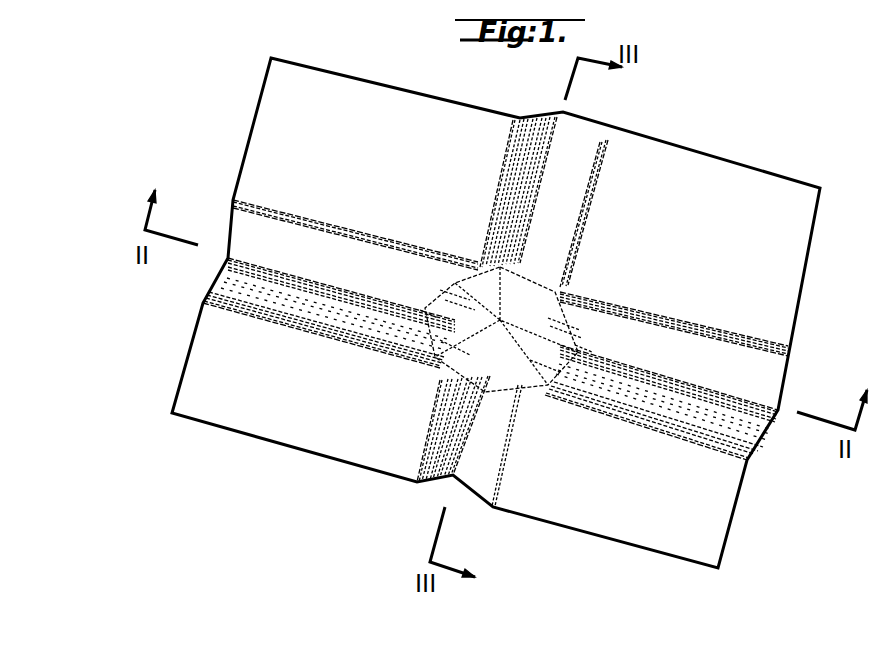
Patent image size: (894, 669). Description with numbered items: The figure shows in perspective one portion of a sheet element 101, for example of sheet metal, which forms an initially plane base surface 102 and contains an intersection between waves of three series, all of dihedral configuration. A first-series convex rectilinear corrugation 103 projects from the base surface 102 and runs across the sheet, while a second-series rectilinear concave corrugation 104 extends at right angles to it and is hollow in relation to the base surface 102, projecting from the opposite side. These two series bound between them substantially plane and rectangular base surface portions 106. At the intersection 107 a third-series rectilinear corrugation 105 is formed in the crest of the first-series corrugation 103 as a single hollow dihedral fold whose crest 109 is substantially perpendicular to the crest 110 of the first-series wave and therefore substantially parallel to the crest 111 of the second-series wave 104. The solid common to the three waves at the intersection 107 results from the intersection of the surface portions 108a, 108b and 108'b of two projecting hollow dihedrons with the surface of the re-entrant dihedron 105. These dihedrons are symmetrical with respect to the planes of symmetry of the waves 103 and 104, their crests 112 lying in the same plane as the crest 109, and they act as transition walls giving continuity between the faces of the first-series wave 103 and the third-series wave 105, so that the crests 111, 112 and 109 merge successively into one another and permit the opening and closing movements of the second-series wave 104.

The sheet element 101 is at (740, 193).
The base surface 102 is at (335, 97).
The first-series convex rectilinear corrugation 103 is at (575, 150).
The second-series rectilinear concave corrugation 104 is at (297, 242).
The third-series rectilinear corrugation 105 is at (498, 340).
The base surface portion 106 is at (647, 498).
The intersection 107 is at (575, 283).
The surface portion of projecting dihedron 108a is at (450, 340).
The surface portion of projecting dihedron 108b is at (563, 323).
The surface portion of second projecting dihedron 108'b is at (440, 265).
The crest of third-series wave 109 is at (495, 322).
The crest of first-series wave 110 is at (548, 153).
The crest of second-series wave 111 is at (717, 393).
The crest of projecting dihedron 112 is at (428, 308).